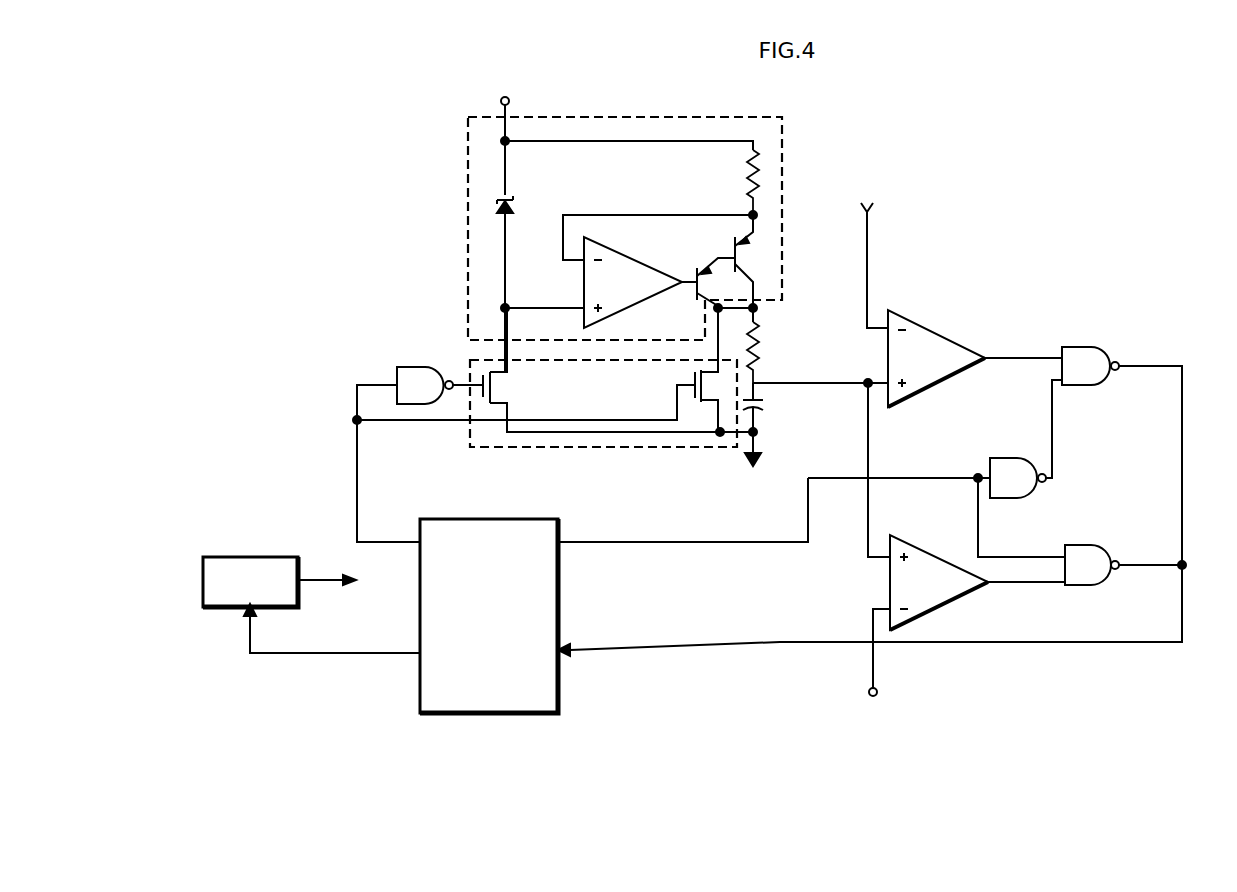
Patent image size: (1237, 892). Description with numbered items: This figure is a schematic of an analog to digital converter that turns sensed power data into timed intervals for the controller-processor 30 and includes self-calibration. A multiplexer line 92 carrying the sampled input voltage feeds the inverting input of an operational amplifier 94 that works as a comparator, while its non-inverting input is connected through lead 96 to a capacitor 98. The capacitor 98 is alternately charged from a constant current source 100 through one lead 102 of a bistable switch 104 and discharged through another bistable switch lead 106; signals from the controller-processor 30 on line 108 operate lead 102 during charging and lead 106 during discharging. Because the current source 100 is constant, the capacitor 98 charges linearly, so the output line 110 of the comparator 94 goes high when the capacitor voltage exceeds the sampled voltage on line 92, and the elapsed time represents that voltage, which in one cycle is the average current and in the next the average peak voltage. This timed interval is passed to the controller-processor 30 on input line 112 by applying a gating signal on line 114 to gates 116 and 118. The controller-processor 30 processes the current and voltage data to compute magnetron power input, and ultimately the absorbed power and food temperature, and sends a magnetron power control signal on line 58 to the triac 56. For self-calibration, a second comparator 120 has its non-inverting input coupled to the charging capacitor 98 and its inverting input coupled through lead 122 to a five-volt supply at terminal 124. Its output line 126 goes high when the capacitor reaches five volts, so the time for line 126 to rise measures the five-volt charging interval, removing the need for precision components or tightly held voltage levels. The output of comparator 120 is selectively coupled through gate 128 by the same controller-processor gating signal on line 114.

The controller-processor 30 is at (558, 605).
The triac 56 is at (292, 598).
The line 58 is at (332, 655).
The multiplexer line 92 is at (868, 248).
The operational amplifier 94 is at (952, 340).
The lead 96 is at (818, 383).
The capacitor 98 is at (768, 404).
The constant current source 100 is at (638, 117).
The lead of bistable switch 102 is at (505, 345).
The bistable switch 104 is at (637, 448).
The bistable switch lead 106 is at (703, 319).
The line 108 is at (357, 470).
The output line 110 is at (1020, 357).
The input line 112 is at (680, 648).
The line 114 is at (700, 541).
The gate 116 is at (1008, 460).
The gate 118 is at (1092, 347).
The comparator 120 is at (930, 556).
The lead 122 is at (873, 620).
The terminal 124 is at (878, 694).
The output line 126 is at (1018, 583).
The gate 128 is at (1094, 546).